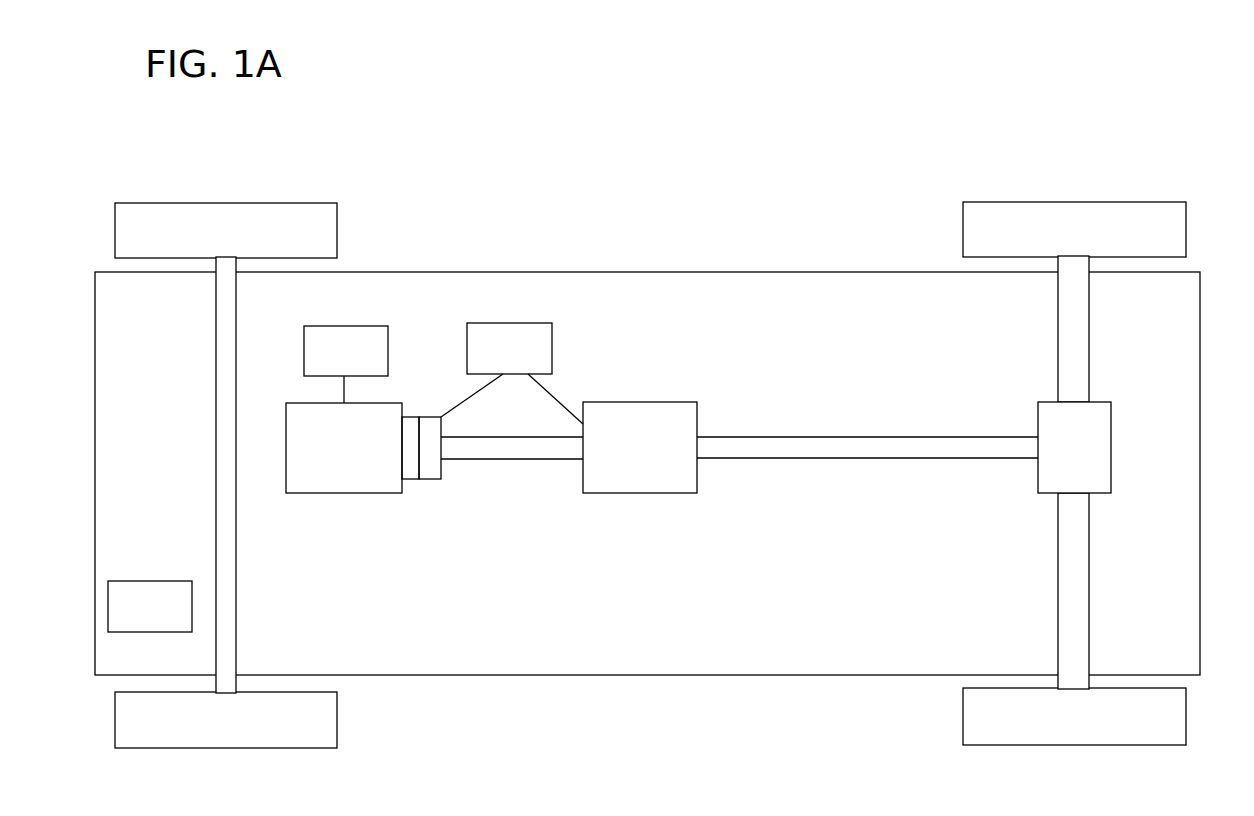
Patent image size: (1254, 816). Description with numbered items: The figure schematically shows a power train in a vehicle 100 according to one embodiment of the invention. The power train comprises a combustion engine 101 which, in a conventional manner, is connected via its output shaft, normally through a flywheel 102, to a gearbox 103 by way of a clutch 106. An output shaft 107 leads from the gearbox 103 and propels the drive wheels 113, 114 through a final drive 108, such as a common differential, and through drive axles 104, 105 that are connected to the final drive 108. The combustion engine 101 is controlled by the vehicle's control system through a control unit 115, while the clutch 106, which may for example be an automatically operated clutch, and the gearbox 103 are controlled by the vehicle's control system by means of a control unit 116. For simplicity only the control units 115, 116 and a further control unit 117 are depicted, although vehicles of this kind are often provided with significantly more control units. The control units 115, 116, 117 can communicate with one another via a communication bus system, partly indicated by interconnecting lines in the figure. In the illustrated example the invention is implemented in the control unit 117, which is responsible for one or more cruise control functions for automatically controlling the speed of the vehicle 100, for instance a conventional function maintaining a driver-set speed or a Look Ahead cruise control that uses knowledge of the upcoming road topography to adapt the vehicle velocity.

The vehicle 100 is at (555, 113).
The combustion engine 101 is at (295, 485).
The flywheel 102 is at (415, 482).
The gearbox 103 is at (640, 413).
The drive axle 104 is at (1078, 327).
The drive axle 105 is at (1083, 597).
The clutch 106 is at (432, 472).
The output shaft 107 is at (957, 452).
The final drive 108 is at (1102, 443).
The drive wheel 113 is at (1180, 218).
The drive wheel 114 is at (1180, 717).
The control unit 115 is at (347, 360).
The control unit 116 is at (528, 362).
The control unit 117 is at (150, 616).